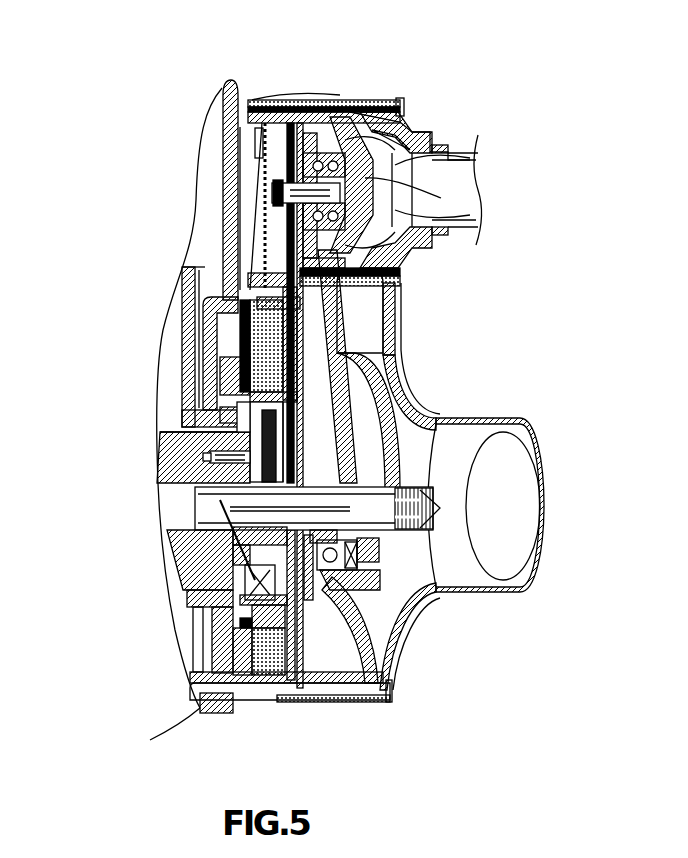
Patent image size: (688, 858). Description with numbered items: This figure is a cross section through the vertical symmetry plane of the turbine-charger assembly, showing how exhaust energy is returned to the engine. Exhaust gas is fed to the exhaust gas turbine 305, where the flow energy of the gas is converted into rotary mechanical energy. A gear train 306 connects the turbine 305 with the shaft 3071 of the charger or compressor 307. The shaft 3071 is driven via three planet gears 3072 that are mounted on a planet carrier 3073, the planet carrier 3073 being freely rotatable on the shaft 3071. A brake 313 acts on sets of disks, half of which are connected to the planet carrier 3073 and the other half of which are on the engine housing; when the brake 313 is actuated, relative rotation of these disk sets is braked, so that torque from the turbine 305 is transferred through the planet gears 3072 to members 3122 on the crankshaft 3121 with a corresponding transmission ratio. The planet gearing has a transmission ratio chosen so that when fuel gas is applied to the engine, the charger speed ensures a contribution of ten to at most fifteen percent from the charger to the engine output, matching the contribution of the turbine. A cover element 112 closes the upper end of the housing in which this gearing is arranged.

The cover plate 112 is at (307, 95).
The gear train 306 is at (285, 257).
The exhaust gas turbine 305 is at (441, 198).
The charger of compressor 307 is at (404, 374).
The brake 313 is at (200, 364).
The crankshaft 3121 is at (192, 462).
The shaft of the charger 3071 is at (193, 500).
The members on the crankshaft 3122 is at (192, 557).
The planet gears 3072 is at (200, 622).
The planet carrier 3073 is at (395, 625).